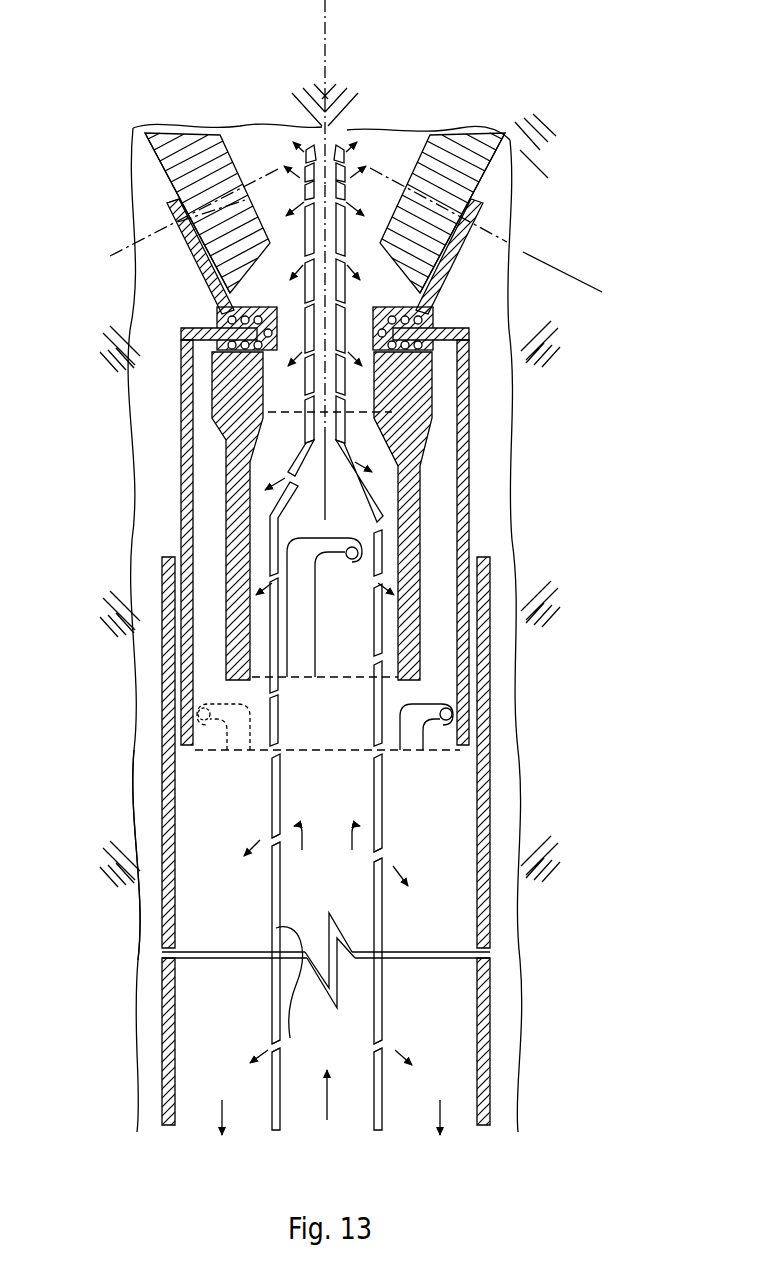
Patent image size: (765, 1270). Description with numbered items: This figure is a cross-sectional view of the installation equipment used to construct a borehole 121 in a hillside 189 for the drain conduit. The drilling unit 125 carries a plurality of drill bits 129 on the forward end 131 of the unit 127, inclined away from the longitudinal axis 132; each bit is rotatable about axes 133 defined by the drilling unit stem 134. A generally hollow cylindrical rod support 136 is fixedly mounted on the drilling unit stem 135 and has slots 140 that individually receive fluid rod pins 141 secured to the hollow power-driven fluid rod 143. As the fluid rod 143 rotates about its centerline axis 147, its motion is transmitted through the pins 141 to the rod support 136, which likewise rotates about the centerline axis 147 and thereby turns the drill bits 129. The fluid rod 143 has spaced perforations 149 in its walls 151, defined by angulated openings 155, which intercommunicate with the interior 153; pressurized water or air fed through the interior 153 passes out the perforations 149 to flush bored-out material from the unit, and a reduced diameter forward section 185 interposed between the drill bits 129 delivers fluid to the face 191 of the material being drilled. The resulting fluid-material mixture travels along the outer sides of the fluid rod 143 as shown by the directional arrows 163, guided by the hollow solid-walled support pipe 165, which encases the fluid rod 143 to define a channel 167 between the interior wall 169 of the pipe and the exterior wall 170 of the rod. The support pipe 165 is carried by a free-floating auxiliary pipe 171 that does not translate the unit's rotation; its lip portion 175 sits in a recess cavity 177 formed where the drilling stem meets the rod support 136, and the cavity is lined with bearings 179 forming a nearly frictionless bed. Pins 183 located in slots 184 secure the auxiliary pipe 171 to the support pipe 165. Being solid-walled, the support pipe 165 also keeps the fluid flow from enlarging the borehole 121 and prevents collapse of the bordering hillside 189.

The borehole 121 is at (142, 812).
The drilling unit 125 is at (470, 446).
The unit 127 is at (204, 283).
The drill bits 129 is at (174, 146).
The forward end 131 is at (164, 204).
The longitudinal axis 132 is at (330, 61).
The axes 133 is at (132, 248).
The drilling unit stem 134 is at (243, 182).
The drilling unit stem 135 is at (212, 308).
The rod support 136 is at (234, 482).
The slots 140 is at (302, 619).
The fluid rod pins 141 is at (352, 560).
The fluid rod 143 is at (272, 906).
The centerline axis 147 is at (323, 28).
The perforations 149 is at (370, 852).
The walls 151 is at (382, 814).
The interior 153 is at (364, 906).
The angulated openings 155 is at (280, 1021).
The directional arrows 163 is at (306, 272).
The support pipe 165 is at (490, 844).
The channel 167 is at (254, 1006).
The interior wall 169 is at (176, 794).
The exterior wall 170 is at (274, 836).
The auxiliary pipe 171 is at (180, 506).
The lip portion 175 is at (444, 327).
The recess cavity 177 is at (434, 356).
The bearings 179 is at (224, 350).
The pins 183 is at (200, 714).
The slots 184 is at (228, 722).
The reduced diameter forward section 185 is at (343, 191).
The hillside 189 is at (140, 1020).
The face 191 is at (418, 100).